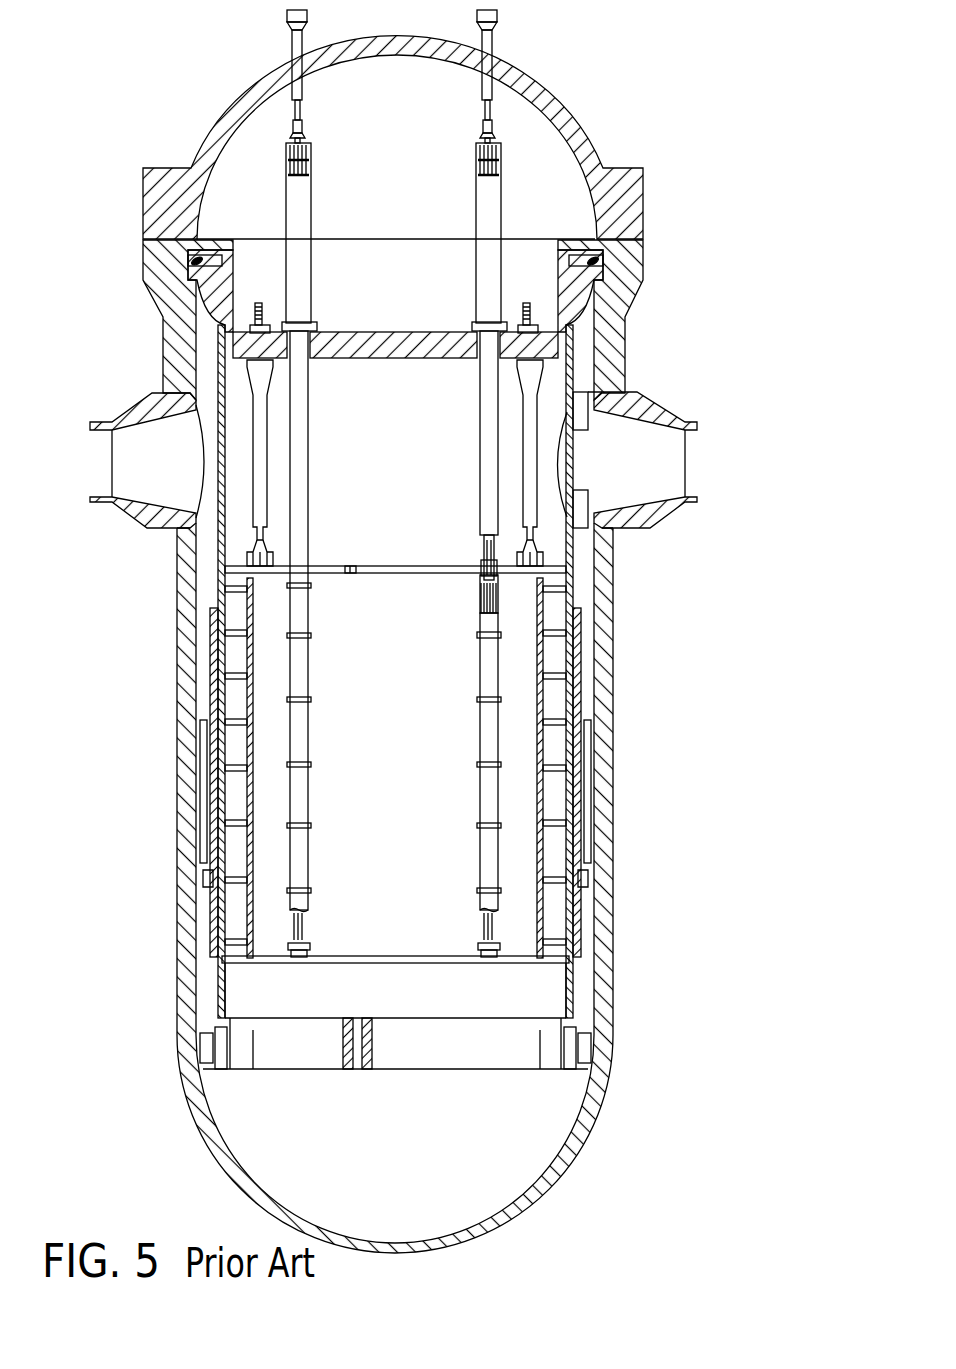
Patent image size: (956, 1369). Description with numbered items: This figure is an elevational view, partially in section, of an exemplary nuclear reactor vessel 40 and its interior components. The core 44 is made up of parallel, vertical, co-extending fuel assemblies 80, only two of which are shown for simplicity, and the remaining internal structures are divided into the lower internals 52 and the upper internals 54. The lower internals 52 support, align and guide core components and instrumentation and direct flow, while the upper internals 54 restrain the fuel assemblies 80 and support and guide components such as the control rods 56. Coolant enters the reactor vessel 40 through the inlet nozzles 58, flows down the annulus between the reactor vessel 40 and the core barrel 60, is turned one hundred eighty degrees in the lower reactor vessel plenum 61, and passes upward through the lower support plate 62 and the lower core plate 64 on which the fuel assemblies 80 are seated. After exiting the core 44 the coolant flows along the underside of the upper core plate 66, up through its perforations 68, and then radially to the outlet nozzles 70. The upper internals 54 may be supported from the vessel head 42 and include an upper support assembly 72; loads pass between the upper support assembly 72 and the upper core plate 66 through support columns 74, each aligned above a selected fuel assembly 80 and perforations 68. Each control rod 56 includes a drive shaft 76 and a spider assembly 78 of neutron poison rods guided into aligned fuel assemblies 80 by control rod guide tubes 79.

The reactor vessel 40 is at (613, 642).
The vessel head 42 is at (642, 208).
The core 44 is at (409, 758).
The lower internals 52 is at (409, 1003).
The upper internals 54 is at (409, 432).
The control rods 56 is at (478, 575).
The inlet nozzles 58 is at (125, 408).
The core barrel 60 is at (215, 566).
The lower reactor vessel plenum 61 is at (560, 1122).
The lower support plate 62 is at (437, 1058).
The lower core plate 64 is at (462, 957).
The upper core plate 66 is at (423, 577).
The perforations 68 is at (353, 567).
The outlet nozzles 70 is at (662, 410).
The upper support assembly 72 is at (566, 238).
The support columns 74 is at (522, 413).
The drive shaft 76 is at (482, 540).
The spider assembly 78 is at (480, 563).
The control rod guide tubes 79 is at (480, 487).
The fuel assemblies 80 is at (308, 672).